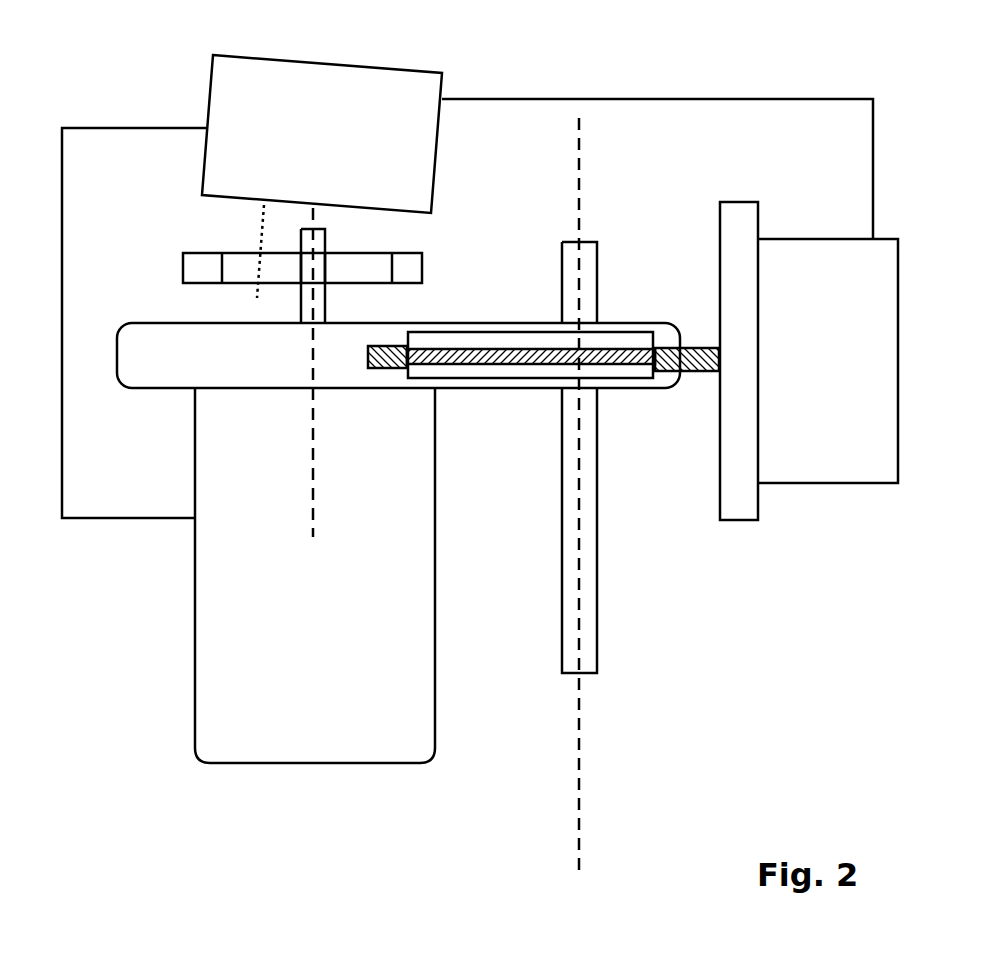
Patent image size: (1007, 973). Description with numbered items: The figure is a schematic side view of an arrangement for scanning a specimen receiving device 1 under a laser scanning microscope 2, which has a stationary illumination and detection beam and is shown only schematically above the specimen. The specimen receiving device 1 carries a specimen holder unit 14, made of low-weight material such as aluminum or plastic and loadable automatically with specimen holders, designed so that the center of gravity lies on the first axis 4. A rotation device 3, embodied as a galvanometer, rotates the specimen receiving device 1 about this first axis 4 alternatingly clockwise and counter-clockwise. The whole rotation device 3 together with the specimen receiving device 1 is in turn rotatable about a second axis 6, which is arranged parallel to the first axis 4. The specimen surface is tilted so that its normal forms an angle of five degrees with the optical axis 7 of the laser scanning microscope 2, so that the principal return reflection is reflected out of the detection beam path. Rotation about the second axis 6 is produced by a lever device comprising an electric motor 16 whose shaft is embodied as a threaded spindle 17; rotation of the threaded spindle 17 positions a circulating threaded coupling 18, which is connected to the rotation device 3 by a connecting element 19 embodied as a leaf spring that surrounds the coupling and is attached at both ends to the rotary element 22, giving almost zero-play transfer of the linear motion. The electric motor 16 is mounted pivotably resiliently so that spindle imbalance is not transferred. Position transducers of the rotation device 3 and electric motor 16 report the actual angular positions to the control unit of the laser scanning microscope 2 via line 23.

The specimen receiving device 1 is at (165, 267).
The laser scanning microscope 2 is at (322, 134).
The rotation device 3 is at (342, 732).
The first axis 4 is at (313, 517).
The second axis 6 is at (585, 630).
The optical axis 7 is at (262, 232).
The specimen holder unit 14 is at (363, 267).
The electric motor 16 is at (849, 372).
The threaded spindle 17 is at (690, 372).
The circulating threaded coupling 18 is at (512, 372).
The connecting element 19 is at (465, 353).
The rotary element 22 is at (143, 357).
The line 23 is at (655, 100).